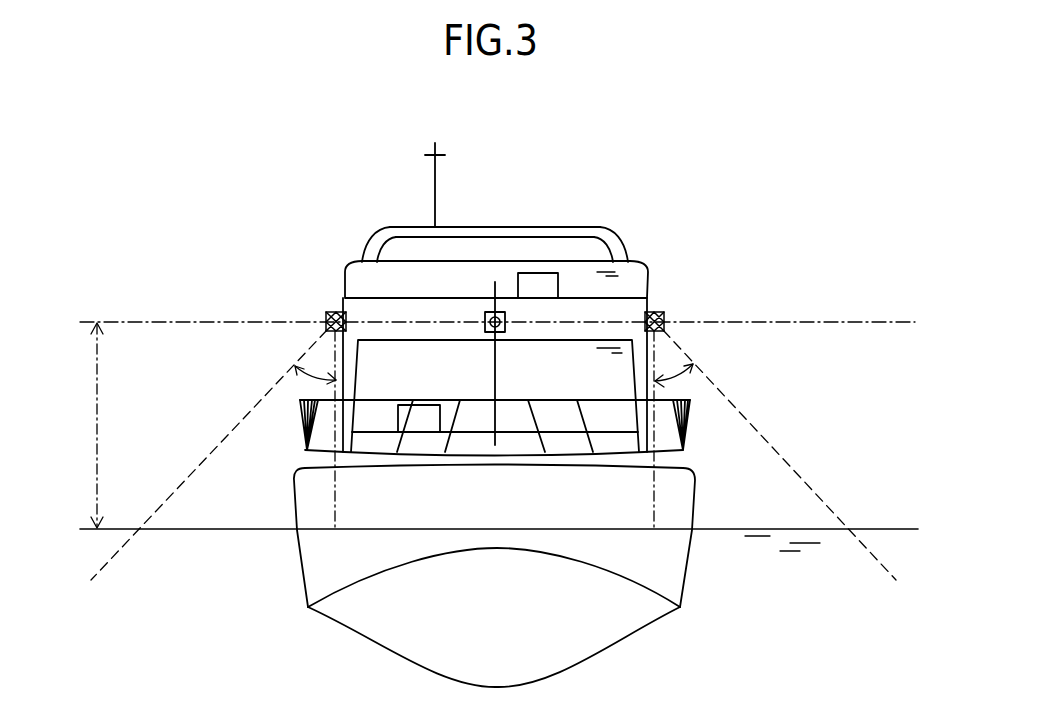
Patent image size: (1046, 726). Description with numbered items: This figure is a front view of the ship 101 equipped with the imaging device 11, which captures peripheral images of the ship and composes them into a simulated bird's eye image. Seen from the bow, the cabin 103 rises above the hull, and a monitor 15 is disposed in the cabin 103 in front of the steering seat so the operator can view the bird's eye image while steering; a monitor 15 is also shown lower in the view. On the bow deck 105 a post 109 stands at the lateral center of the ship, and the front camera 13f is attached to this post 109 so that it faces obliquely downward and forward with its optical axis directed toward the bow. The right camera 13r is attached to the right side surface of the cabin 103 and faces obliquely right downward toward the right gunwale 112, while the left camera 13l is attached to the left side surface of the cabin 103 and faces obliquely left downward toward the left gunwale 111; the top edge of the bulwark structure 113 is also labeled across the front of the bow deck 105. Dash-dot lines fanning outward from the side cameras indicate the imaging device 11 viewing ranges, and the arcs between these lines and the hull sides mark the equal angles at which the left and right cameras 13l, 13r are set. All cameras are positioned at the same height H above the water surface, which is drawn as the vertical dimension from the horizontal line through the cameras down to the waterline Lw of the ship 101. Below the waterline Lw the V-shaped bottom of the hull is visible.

The ship 101 is at (498, 224).
The cabin 103 is at (577, 313).
The monitor 15 is at (540, 283).
The gunwale 113 is at (395, 400).
The bow deck 105 is at (523, 440).
The post 109 is at (497, 373).
The front camera 13f is at (480, 318).
The right camera 13r is at (327, 318).
The left camera 13l is at (663, 316).
The right gunwale 112 is at (300, 449).
The left gunwale 111 is at (690, 450).
The imaging device 11 is at (713, 357).
The height from the water surface H is at (109, 425).
The waterline Lw is at (190, 529).